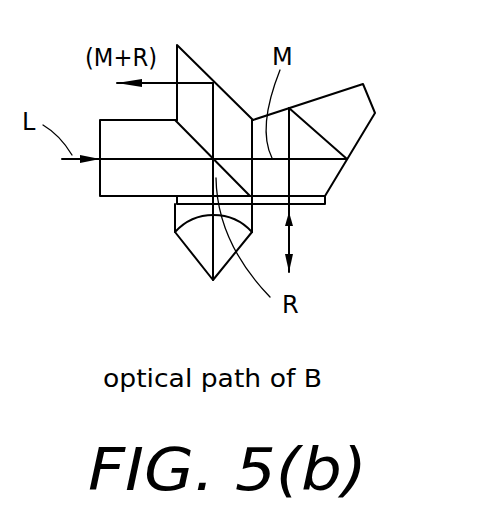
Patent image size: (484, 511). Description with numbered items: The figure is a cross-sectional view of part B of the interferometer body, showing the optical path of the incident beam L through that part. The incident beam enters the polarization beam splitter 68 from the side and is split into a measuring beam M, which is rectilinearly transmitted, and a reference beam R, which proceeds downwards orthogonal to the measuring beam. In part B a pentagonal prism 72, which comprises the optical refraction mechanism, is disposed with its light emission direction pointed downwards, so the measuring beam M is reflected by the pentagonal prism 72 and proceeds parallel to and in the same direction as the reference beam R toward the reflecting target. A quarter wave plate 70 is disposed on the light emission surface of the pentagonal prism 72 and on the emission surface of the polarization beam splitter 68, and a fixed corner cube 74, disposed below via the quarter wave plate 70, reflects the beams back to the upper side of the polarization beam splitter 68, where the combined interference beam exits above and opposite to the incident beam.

The polarization beam splitter 68 is at (118, 175).
The 1/4 wave plate 70 is at (180, 198).
The pentagonal prism 72 is at (345, 107).
The fixed corner cube 74 is at (202, 247).